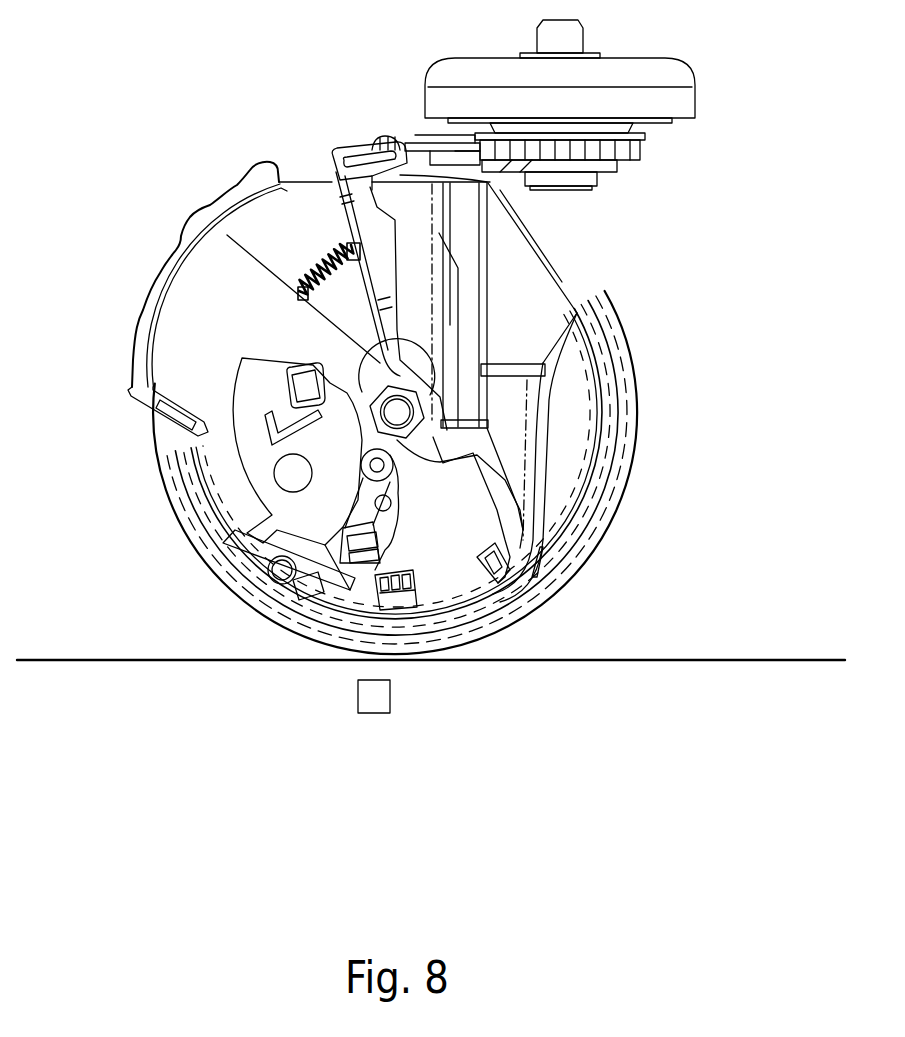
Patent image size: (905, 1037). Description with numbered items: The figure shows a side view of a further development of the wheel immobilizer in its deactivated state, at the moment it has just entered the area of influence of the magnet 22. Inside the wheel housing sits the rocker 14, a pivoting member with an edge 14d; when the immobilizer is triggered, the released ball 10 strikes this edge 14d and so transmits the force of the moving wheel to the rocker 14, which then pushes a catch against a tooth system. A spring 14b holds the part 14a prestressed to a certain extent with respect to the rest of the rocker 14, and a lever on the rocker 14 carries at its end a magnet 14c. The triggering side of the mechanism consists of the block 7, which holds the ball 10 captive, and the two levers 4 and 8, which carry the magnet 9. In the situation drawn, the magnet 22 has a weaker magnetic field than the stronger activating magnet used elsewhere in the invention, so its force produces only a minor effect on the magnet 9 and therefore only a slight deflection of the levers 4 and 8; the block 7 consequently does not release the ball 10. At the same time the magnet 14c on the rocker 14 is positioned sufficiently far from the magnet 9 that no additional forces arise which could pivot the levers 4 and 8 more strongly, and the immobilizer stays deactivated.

The lever 4 is at (367, 503).
The block 7 is at (302, 382).
The lever 8 is at (388, 532).
The magnet 9 is at (400, 598).
The ball 10 is at (285, 400).
The rocker 14 is at (202, 308).
The part 14a is at (368, 215).
The spring 14b is at (315, 265).
The magnet 14c is at (503, 567).
The edge 14d is at (497, 485).
The magnet 22 is at (357, 700).